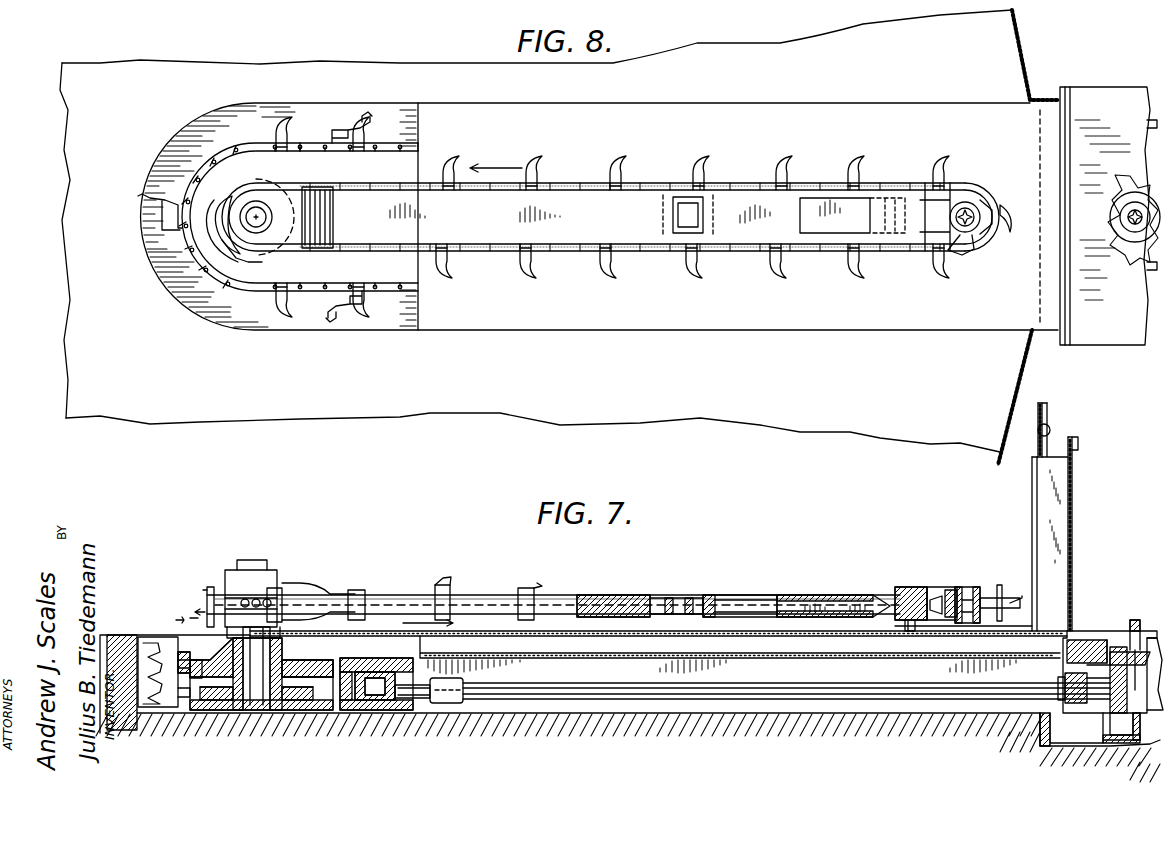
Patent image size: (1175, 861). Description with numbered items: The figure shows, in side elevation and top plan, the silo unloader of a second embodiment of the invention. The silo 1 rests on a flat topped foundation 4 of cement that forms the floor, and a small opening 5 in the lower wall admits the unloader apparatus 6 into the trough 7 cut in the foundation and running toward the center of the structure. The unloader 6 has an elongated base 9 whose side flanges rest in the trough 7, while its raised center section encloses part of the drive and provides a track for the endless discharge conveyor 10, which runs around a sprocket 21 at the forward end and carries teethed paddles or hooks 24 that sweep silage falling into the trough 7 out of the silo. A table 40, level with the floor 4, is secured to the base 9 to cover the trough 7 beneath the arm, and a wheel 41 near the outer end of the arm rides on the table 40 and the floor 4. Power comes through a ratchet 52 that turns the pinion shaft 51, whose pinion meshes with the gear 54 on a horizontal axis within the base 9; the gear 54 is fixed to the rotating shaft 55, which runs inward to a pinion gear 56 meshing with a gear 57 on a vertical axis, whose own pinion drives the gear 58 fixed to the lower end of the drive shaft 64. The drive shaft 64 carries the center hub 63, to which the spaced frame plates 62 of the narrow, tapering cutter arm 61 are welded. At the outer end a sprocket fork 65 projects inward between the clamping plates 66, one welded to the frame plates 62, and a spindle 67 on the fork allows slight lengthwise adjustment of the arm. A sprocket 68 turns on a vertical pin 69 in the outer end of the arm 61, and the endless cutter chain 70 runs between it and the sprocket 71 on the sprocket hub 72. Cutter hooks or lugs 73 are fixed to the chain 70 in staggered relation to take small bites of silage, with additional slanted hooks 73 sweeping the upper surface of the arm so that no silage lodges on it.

In FIG. 8, the silo 1 is at (1018, 388).
In FIG. 7, the silo 1 is at (1044, 412).
In FIG. 8, the foundation 4 is at (442, 408).
In FIG. 7, the foundation 4 is at (130, 634).
In FIG. 7, the opening 5 is at (1052, 517).
In FIG. 8, the unloader apparatus 6 is at (293, 306).
In FIG. 8, the trough 7 is at (382, 318).
In FIG. 7, the trough 7 is at (390, 636).
In FIG. 7, the base 9 is at (615, 656).
In FIG. 8, the discharge conveyor 10 is at (300, 142).
In FIG. 7, the discharge conveyor 10 is at (187, 640).
In FIG. 7, the sprocket 21 is at (335, 656).
In FIG. 8, the teethed paddles or hooks 24 is at (375, 114).
In FIG. 7, the teethed paddles or hooks 24 is at (162, 700).
In FIG. 8, the table 40 is at (651, 336).
In FIG. 7, the wheel 41 is at (888, 637).
In FIG. 8, the pinion shaft 51 is at (1140, 200).
In FIG. 7, the pinion shaft 51 is at (1134, 630).
In FIG. 8, the ratchet 52 is at (1118, 238).
In FIG. 7, the gear 54 is at (1108, 720).
In FIG. 7, the rotating shaft 55 is at (830, 678).
In FIG. 7, the pinion gear 56 is at (378, 710).
In FIG. 7, the gear 57 is at (362, 670).
In FIG. 7, the gear 58 is at (295, 700).
In FIG. 8, the cutter arm 61 is at (650, 186).
In FIG. 7, the cutter arm 61 is at (732, 589).
In FIG. 8, the frame plates 62 is at (571, 205).
In FIG. 7, the frame plates 62 is at (625, 592).
In FIG. 8, the center hub 63 is at (322, 223).
In FIG. 7, the center hub 63 is at (320, 588).
In FIG. 8, the drive shaft 64 is at (256, 214).
In FIG. 7, the drive shaft 64 is at (255, 705).
In FIG. 8, the sprocket fork 65 is at (926, 205).
In FIG. 7, the sprocket fork 65 is at (915, 588).
In FIG. 8, the clamping plates 66 is at (832, 226).
In FIG. 7, the clamping plates 66 is at (834, 596).
In FIG. 7, the spindle 67 is at (762, 603).
In FIG. 8, the sprocket 68 is at (972, 196).
In FIG. 7, the sprocket 68 is at (940, 598).
In FIG. 8, the vertical pin 69 is at (967, 228).
In FIG. 7, the vertical pin 69 is at (966, 586).
In FIG. 8, the cutter chain 70 is at (493, 256).
In FIG. 7, the cutter chain 70 is at (212, 594).
In FIG. 8, the sprocket 71 is at (240, 256).
In FIG. 7, the sprocket 71 is at (258, 598).
In FIG. 7, the sprocket hub 72 is at (232, 622).
In FIG. 8, the cutter hooks or lugs 73 is at (185, 250).
In FIG. 7, the cutter hooks or lugs 73 is at (224, 576).